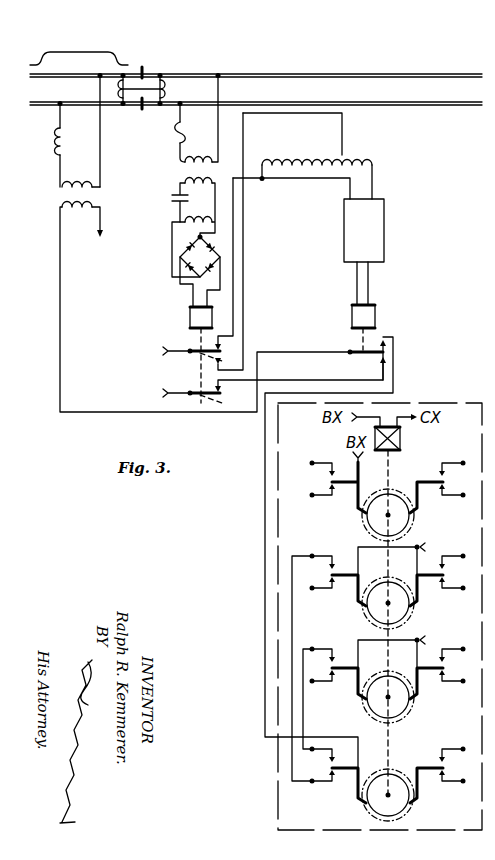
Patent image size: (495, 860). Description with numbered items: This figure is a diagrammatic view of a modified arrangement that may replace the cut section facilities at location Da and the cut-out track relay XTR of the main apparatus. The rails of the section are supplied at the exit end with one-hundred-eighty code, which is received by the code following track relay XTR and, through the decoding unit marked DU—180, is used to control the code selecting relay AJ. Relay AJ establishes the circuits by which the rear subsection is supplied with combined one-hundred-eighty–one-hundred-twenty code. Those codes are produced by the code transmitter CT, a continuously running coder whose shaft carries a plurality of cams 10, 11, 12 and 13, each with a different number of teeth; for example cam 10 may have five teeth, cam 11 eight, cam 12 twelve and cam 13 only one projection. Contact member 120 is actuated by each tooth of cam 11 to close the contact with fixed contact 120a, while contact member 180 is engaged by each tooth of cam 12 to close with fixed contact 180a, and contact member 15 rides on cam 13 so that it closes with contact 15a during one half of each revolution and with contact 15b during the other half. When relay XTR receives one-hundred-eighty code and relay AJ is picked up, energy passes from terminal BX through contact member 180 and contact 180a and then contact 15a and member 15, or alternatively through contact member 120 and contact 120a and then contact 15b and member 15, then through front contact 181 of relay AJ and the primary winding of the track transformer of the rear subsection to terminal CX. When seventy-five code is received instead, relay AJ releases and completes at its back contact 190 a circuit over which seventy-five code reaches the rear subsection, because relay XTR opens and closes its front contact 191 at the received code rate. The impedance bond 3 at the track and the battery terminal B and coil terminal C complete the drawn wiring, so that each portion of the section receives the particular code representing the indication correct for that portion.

The impedance bond 3 is at (170, 93).
The cut section location Da is at (91, 61).
The terminal CX is at (96, 231).
The code following track relay XTR is at (190, 319).
The battery terminal B is at (195, 241).
The front contact of relay XTR 191 is at (254, 382).
The back contact of relay AJ 190 is at (360, 366).
The front contact of relay AJ 181 is at (393, 341).
The code selecting relay AJ is at (351, 320).
The contact member 180 is at (384, 224).
The coil terminal C is at (295, 150).
The code transmitter CT is at (438, 402).
The cam 10 is at (366, 521).
The contact member 120 is at (337, 584).
The contact 120a is at (336, 558).
The cam 11 is at (366, 616).
The contact 180a is at (347, 652).
The cam 12 is at (366, 710).
The contact member 15 is at (353, 767).
The contact 15a is at (333, 760).
The contact 15b is at (337, 782).
The cam 13 is at (366, 807).